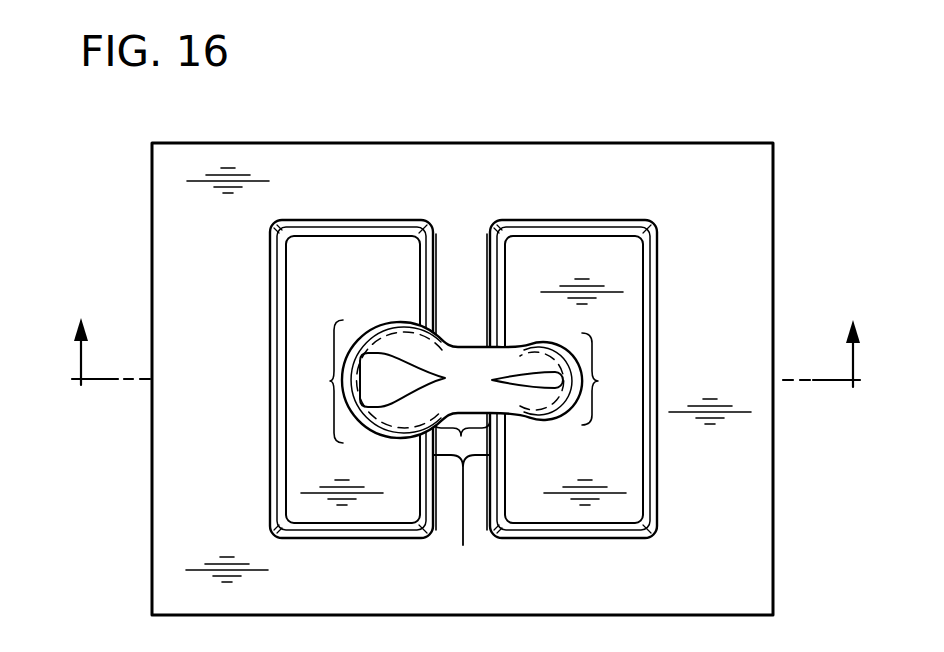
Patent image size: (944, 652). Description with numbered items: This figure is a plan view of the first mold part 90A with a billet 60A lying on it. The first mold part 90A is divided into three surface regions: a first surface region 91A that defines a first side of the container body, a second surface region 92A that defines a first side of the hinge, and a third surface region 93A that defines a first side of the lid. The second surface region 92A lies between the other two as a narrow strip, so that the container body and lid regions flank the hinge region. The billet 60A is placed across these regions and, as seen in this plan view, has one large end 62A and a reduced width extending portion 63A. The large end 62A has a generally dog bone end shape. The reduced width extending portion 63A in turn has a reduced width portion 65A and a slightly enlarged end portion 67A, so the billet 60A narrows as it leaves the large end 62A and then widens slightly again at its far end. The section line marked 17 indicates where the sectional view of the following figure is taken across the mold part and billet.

The first mold part 90A is at (680, 143).
The first surface region 91A is at (388, 246).
The second surface region 92A is at (466, 232).
The third surface region 93A is at (590, 240).
The billet 60A is at (382, 323).
The large end 62A is at (330, 381).
The slightly enlarged end portion 67A is at (598, 381).
The reduced width portion 65A is at (457, 436).
The reduced width extending portion 63A is at (463, 545).
The section line for FIG. 17 is at (473, 349).